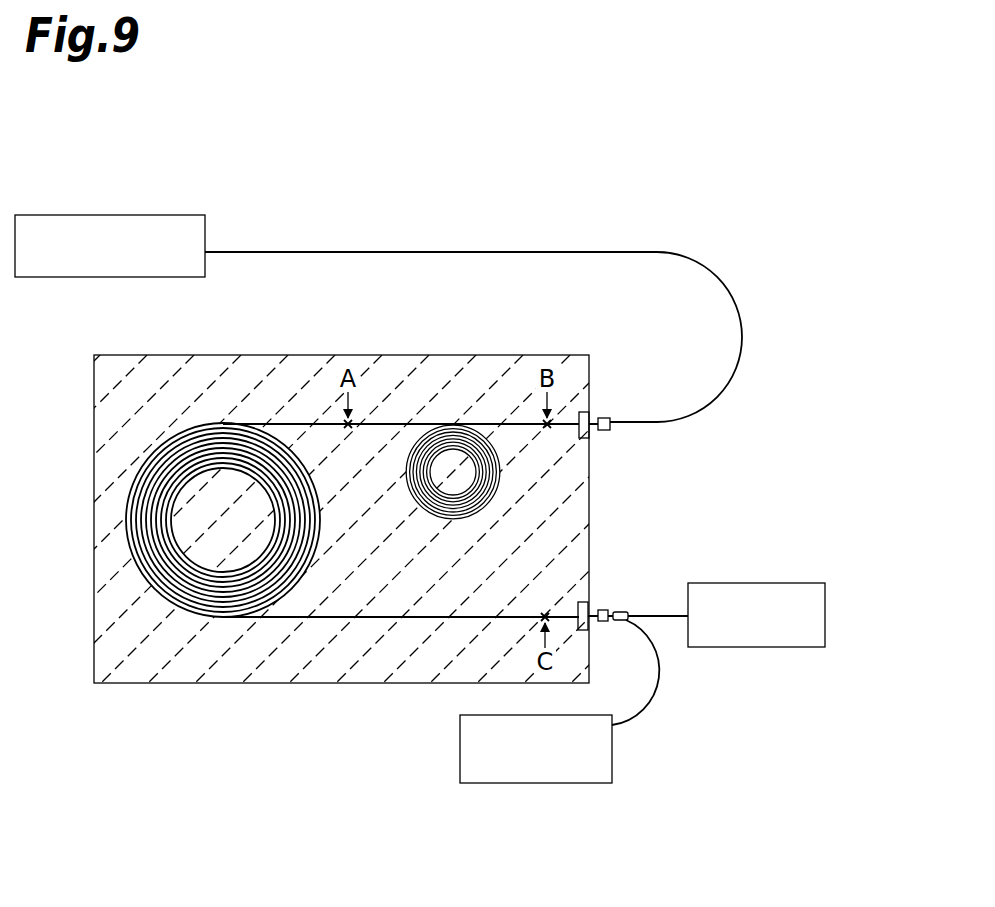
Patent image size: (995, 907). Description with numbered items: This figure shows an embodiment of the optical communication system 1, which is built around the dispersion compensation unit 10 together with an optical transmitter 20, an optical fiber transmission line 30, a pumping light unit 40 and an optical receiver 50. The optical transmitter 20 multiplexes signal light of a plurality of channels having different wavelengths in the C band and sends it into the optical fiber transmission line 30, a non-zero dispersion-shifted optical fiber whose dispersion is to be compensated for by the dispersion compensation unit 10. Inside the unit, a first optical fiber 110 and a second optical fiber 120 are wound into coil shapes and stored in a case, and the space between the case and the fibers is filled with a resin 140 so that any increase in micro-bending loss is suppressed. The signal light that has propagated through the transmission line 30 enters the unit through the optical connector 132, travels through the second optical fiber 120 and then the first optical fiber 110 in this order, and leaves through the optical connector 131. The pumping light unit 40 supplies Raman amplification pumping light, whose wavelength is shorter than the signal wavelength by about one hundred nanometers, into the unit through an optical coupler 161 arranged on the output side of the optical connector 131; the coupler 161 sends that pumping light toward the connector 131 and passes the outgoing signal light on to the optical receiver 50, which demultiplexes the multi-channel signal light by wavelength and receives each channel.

The optical communication system 1 is at (583, 172).
The dispersion compensation unit 10 is at (473, 555).
The optical transmitter 20 is at (143, 215).
The optical fiber transmission line 30 is at (390, 252).
The pumping light unit 40 is at (460, 752).
The optical receiver 50 is at (763, 647).
The first optical fiber 110 is at (314, 549).
The second optical fiber 120 is at (487, 500).
The optical connector 131 is at (603, 609).
The optical connector 132 is at (603, 430).
The resin 140 is at (262, 667).
The optical coupler 161 is at (623, 611).